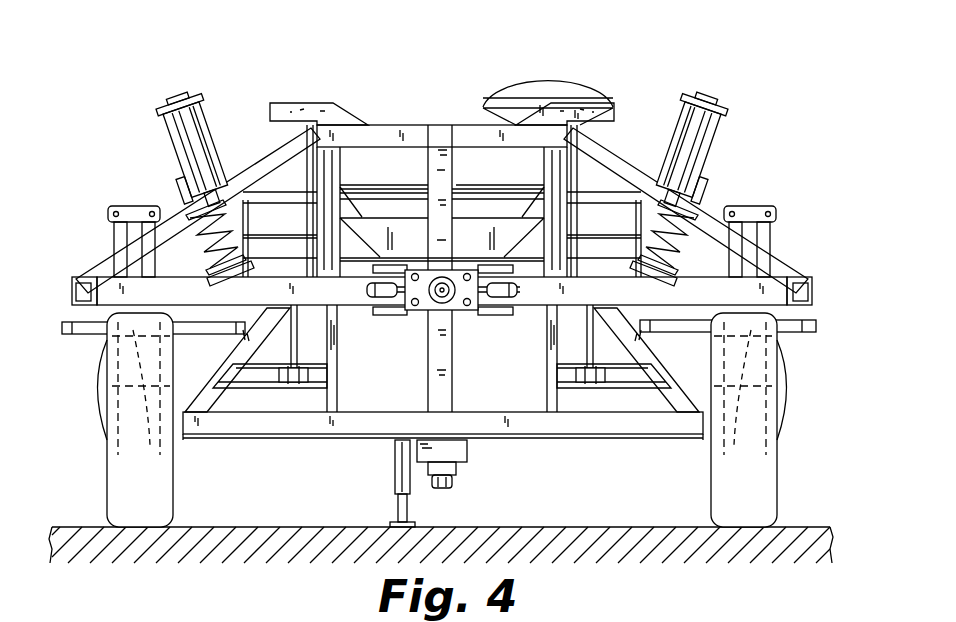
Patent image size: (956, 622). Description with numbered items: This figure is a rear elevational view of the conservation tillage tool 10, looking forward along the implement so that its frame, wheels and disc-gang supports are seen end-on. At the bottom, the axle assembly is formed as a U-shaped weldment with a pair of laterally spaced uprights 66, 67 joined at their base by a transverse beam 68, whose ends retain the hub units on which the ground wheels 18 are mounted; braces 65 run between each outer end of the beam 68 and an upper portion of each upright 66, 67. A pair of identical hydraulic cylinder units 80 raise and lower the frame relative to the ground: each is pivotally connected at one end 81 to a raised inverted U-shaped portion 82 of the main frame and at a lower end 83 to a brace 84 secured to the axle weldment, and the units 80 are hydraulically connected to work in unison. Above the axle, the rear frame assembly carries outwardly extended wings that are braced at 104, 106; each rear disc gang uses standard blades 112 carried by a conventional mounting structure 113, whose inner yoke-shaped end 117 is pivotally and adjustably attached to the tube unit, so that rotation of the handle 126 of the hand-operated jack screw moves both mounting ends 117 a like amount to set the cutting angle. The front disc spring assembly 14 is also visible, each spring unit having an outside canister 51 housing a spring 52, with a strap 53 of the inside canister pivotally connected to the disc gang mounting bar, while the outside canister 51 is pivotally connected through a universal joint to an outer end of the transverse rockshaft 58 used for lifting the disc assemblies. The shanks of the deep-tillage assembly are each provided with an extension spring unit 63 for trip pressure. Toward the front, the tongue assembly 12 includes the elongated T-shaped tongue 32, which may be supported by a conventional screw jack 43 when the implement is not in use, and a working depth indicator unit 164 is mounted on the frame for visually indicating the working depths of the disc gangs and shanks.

The conservation tillage tool 10 is at (704, 32).
The tongue assembly 12 is at (495, 468).
The front disc spring assembly 14 is at (139, 103).
The ground wheels 18 is at (112, 486).
The tongue 32 is at (436, 375).
The screw jack 43 is at (394, 466).
The outside canister 51 is at (166, 130).
The spring 52 is at (180, 216).
The strap 53 is at (215, 268).
The transverse rockshaft 58 is at (370, 158).
The extension spring unit 63 is at (128, 205).
The braces 65 is at (232, 370).
The upright 66 is at (338, 360).
The upright 67 is at (546, 330).
The transverse beam 68 is at (298, 428).
The hydraulic cylinder units 80 is at (280, 177).
The one end of hydraulic cylinder unit 81 is at (283, 137).
The raised inverted U-shaped portion 82 is at (285, 104).
The lower end of hydraulic cylinder unit 83 is at (300, 332).
The brace 84 is at (262, 375).
The wing brace 104 is at (100, 272).
The wing brace 106 is at (790, 270).
The blades 112 is at (97, 375).
The mounting structure 113 is at (82, 272).
The inner yoke-shaped end 117 is at (497, 264).
The handle 126 is at (484, 302).
The working depth indicator unit 164 is at (602, 76).